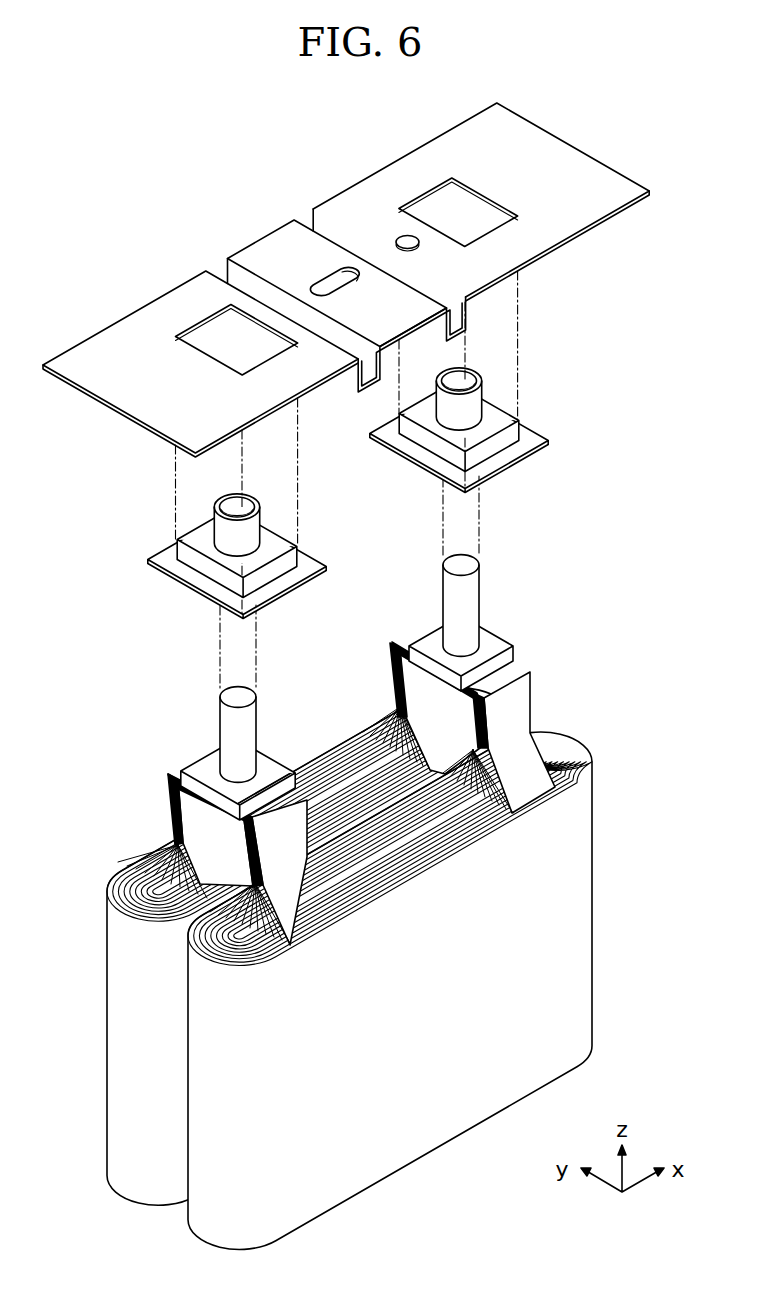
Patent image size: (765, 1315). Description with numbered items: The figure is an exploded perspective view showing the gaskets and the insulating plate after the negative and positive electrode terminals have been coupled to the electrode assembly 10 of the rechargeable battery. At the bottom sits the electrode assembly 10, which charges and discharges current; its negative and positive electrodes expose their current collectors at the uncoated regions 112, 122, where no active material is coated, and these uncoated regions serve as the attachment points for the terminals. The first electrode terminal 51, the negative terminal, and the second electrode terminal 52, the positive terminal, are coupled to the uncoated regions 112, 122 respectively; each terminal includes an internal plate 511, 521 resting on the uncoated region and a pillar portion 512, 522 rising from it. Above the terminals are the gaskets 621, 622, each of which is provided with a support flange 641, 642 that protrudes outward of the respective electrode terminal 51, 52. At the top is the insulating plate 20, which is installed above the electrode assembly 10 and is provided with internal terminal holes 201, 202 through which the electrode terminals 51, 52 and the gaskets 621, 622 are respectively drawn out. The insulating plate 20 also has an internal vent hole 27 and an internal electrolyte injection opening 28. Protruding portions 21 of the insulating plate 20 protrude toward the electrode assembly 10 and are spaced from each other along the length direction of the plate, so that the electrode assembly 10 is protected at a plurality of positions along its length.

The electrode assembly 10 is at (596, 886).
The insulating plate 20 is at (346, 280).
The internal terminal hole 201 is at (206, 322).
The internal terminal hole 202 is at (426, 186).
The protruding portion 21 is at (368, 388).
The internal vent hole 27 is at (318, 284).
The internal electrolyte injection opening 28 is at (402, 237).
The first electrode terminal 51 is at (227, 716).
The internal plate 511 is at (208, 756).
The pillar portion 512 is at (224, 681).
The second electrode terminal 52 is at (469, 588).
The internal plate 521 is at (491, 641).
The pillar portion 522 is at (447, 552).
The uncoated region 112 is at (178, 770).
The uncoated region 122 is at (403, 642).
The gasket 621 is at (197, 556).
The support flange 641 is at (170, 566).
The gasket 622 is at (499, 420).
The support flange 642 is at (535, 434).